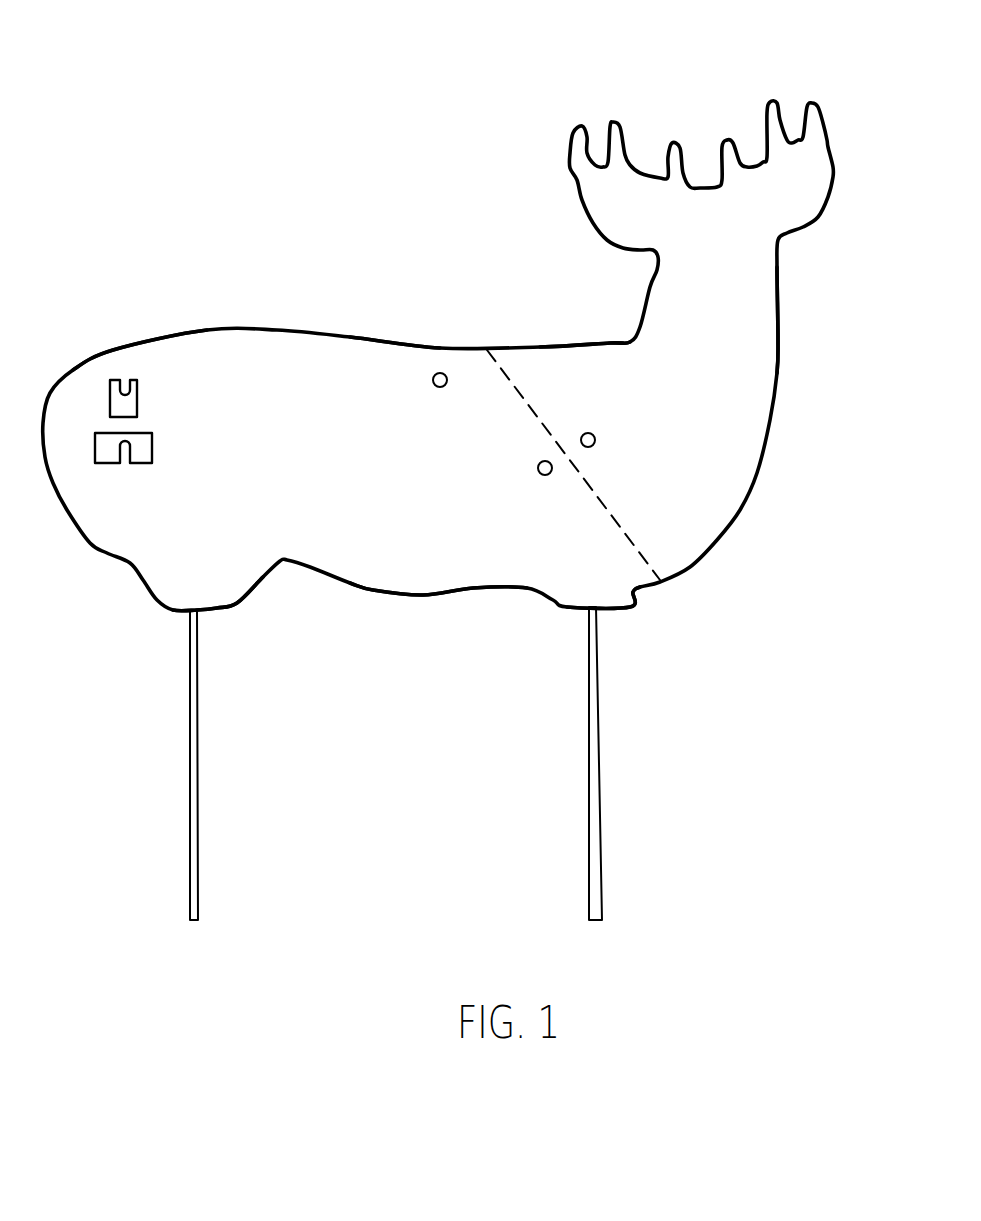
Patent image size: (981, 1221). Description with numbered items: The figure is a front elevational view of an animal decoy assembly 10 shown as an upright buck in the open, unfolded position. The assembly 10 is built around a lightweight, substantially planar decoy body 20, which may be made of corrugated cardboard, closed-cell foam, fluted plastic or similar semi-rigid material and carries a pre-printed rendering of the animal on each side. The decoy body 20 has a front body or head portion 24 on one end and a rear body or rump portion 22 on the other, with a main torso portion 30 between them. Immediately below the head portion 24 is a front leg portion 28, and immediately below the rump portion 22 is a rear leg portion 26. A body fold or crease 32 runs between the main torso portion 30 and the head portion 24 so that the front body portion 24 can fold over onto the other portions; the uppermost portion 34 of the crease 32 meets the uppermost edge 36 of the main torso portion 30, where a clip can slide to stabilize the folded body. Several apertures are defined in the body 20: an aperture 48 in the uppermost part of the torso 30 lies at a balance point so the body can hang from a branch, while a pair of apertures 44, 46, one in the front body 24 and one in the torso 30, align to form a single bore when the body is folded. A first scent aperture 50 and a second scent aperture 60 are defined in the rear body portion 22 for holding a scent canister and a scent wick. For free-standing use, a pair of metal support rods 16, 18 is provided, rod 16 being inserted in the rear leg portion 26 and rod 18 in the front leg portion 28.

The animal decoy assembly 10 is at (303, 218).
The metal support rod 16 is at (198, 780).
The metal support rod 18 is at (597, 725).
The planar decoy body 20 is at (302, 360).
The rear body portion 22 is at (177, 365).
The front body portion 24 is at (748, 308).
The rear leg portion 26 is at (228, 593).
The front leg portion 28 is at (610, 595).
The main torso portion 30 is at (437, 533).
The body fold or crease 32 is at (528, 400).
The uppermost portion of the crease 34 is at (475, 350).
The uppermost edge of the main torso portion 36 is at (595, 342).
The aperture 44 is at (597, 440).
The aperture 46 is at (548, 475).
The aperture 48 is at (432, 379).
The first scent aperture 50 is at (110, 397).
The second scent aperture 60 is at (95, 450).